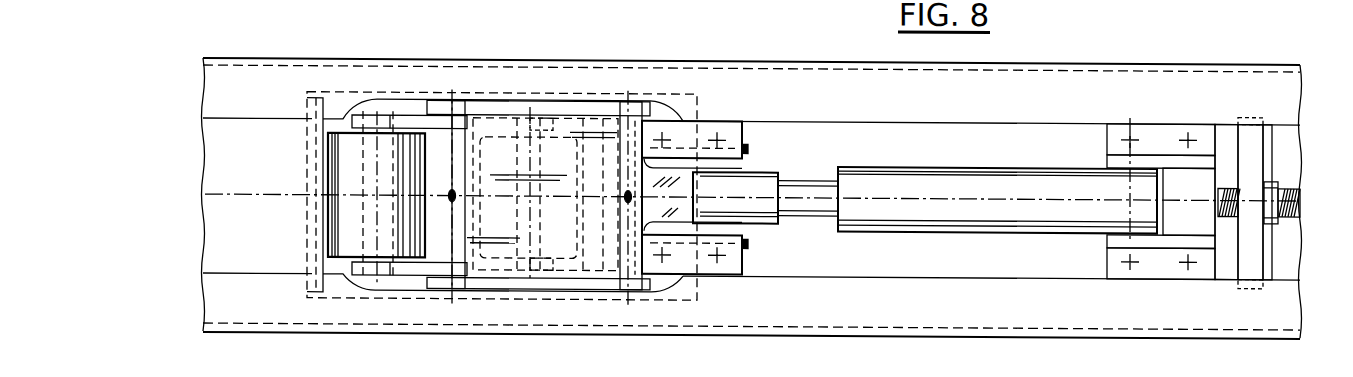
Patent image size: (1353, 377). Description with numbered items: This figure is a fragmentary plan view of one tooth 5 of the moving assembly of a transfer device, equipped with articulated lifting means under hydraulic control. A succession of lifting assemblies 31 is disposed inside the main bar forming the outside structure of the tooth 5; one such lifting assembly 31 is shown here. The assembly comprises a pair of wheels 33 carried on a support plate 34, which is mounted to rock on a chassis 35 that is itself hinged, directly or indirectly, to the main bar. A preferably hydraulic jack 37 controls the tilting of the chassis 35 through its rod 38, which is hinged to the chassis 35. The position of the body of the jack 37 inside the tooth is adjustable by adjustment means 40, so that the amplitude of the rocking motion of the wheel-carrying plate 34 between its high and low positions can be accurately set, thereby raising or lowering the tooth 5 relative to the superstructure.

The tooth 5 is at (1064, 56).
The lifting assembly 31 is at (795, 139).
The wheels 33 is at (337, 232).
The support plate 34 is at (407, 269).
The chassis 35 is at (480, 283).
The hydraulic jack 37 is at (1003, 213).
The rod 38 is at (806, 204).
The adjustment means 40 is at (1287, 180).